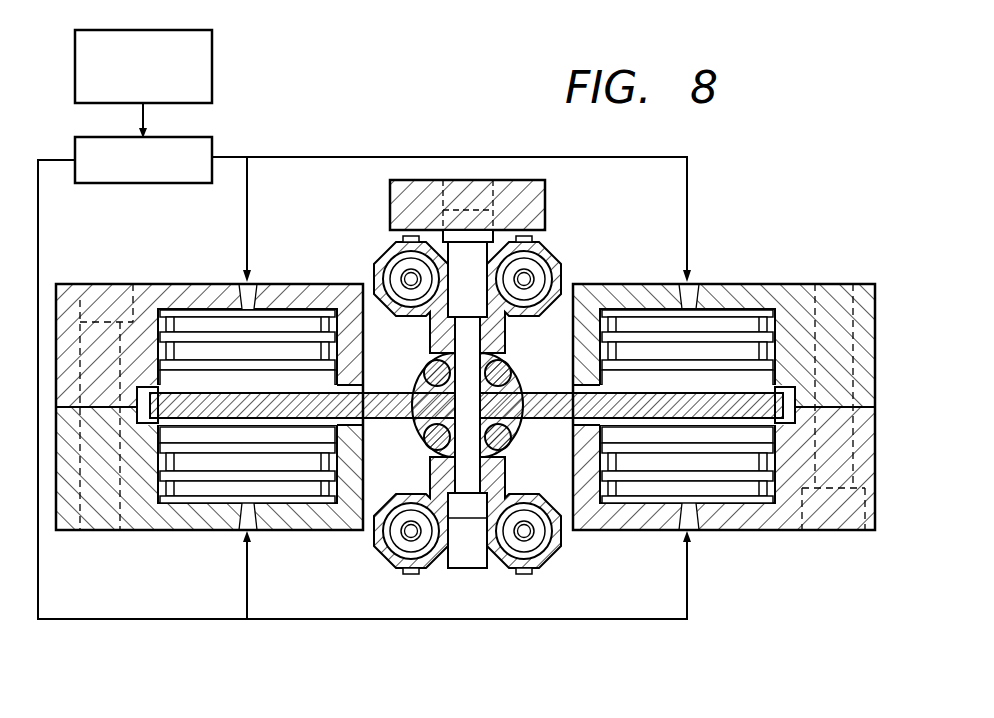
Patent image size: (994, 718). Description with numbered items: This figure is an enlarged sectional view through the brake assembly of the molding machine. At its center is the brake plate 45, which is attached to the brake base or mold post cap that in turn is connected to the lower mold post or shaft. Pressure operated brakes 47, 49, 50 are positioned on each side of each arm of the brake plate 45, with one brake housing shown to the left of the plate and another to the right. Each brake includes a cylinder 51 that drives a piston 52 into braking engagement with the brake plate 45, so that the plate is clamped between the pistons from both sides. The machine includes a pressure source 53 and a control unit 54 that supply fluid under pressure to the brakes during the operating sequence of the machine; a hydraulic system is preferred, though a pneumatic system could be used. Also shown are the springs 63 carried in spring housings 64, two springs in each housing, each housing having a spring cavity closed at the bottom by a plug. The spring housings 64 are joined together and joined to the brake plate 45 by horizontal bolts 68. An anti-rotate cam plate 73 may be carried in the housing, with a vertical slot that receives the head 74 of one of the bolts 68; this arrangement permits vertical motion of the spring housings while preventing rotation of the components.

The brake plate 45 is at (547, 420).
The pressure operated brake 47 is at (173, 282).
The pressure operated brake 49 is at (152, 533).
The pressure operated brake 50 is at (778, 531).
The cylinder 51 is at (628, 320).
The piston 52 is at (757, 280).
The pressure source 53 is at (213, 55).
The control unit 54 is at (108, 184).
The spring 63 is at (378, 548).
The spring housing 64 is at (503, 572).
The horizontal bolt 68 is at (478, 508).
The anti-rotate cam plate 73 is at (548, 200).
The head 74 is at (440, 214).